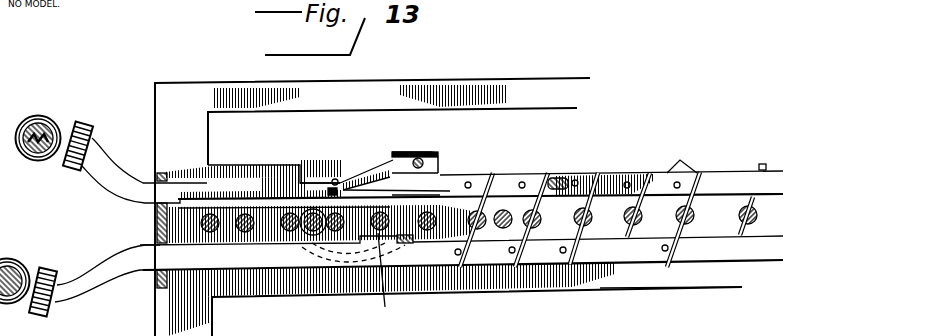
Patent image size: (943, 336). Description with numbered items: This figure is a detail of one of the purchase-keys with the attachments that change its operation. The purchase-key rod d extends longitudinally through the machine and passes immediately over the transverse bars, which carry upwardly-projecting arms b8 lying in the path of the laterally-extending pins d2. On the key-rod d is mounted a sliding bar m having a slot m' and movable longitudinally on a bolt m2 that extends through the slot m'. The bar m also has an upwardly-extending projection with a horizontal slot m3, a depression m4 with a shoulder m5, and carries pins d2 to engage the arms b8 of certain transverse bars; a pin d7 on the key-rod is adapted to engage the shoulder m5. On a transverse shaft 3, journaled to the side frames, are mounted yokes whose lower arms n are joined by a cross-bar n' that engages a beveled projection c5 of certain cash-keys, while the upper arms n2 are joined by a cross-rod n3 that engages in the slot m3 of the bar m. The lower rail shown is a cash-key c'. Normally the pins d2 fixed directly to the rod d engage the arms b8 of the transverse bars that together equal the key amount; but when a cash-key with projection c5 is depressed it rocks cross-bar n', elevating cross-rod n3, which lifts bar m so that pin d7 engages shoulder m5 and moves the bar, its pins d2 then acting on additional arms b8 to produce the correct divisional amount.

The depression m4 is at (310, 159).
The shoulder m5 is at (334, 163).
The pin d7 is at (358, 163).
The upper arms n2 is at (378, 166).
The horizontal slot m3 is at (417, 158).
The cross-rod n3 is at (433, 160).
The sliding bar m is at (611, 156).
The pins d2 is at (482, 167).
The bolt m2 is at (557, 167).
The slot m' is at (589, 198).
The upwardly-projecting arms b8 is at (700, 170).
The purchase-key rod d is at (737, 187).
The lower rail c' is at (671, 269).
The transverse shaft 3 is at (310, 240).
The lower arms n is at (339, 255).
The beveled projection c5 is at (386, 296).
The cross-bar n' is at (410, 274).